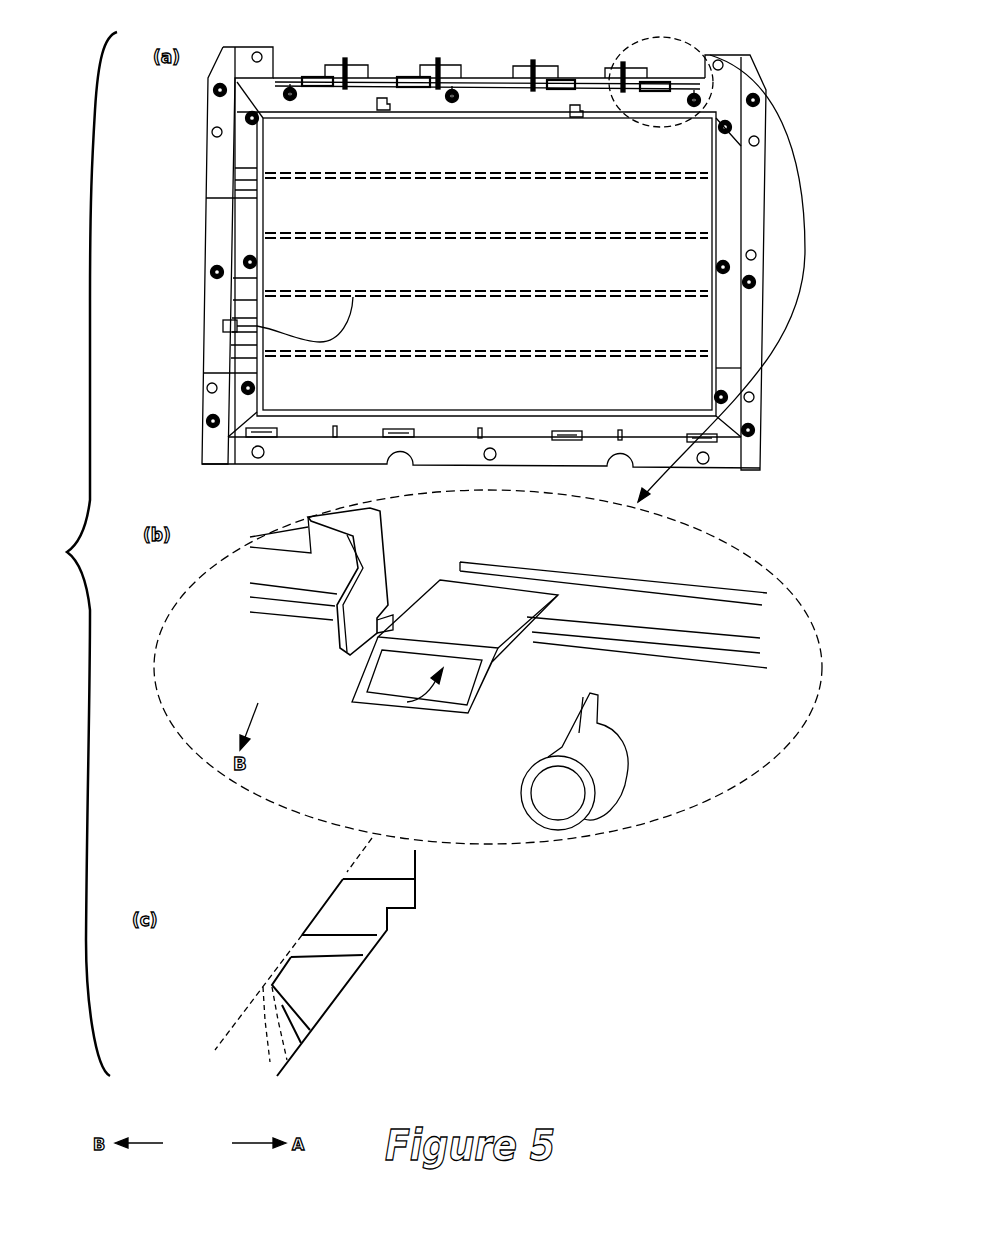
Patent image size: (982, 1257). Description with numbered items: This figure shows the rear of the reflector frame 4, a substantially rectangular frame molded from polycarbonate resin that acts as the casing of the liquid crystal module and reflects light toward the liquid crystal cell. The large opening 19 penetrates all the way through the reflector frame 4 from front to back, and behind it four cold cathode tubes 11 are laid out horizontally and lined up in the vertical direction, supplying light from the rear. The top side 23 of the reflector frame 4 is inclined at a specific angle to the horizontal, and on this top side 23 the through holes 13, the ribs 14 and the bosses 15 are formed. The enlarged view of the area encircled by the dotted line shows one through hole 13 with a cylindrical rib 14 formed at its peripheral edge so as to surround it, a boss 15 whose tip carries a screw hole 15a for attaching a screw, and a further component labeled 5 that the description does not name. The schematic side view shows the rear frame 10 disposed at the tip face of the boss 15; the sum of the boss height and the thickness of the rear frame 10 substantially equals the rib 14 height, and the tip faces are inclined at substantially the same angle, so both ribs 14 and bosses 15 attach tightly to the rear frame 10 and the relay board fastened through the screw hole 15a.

The reflector frame 4 is at (497, 102).
The bracket 5 is at (395, 545).
The rear frame 10 is at (263, 1010).
The cold cathode tubes 11 is at (223, 325).
The through hole 13 is at (748, 55).
The rib 14 is at (640, 92).
The boss 15 is at (710, 88).
The screw hole 15a is at (557, 791).
The opening 19 is at (318, 213).
The top side 23 is at (490, 100).